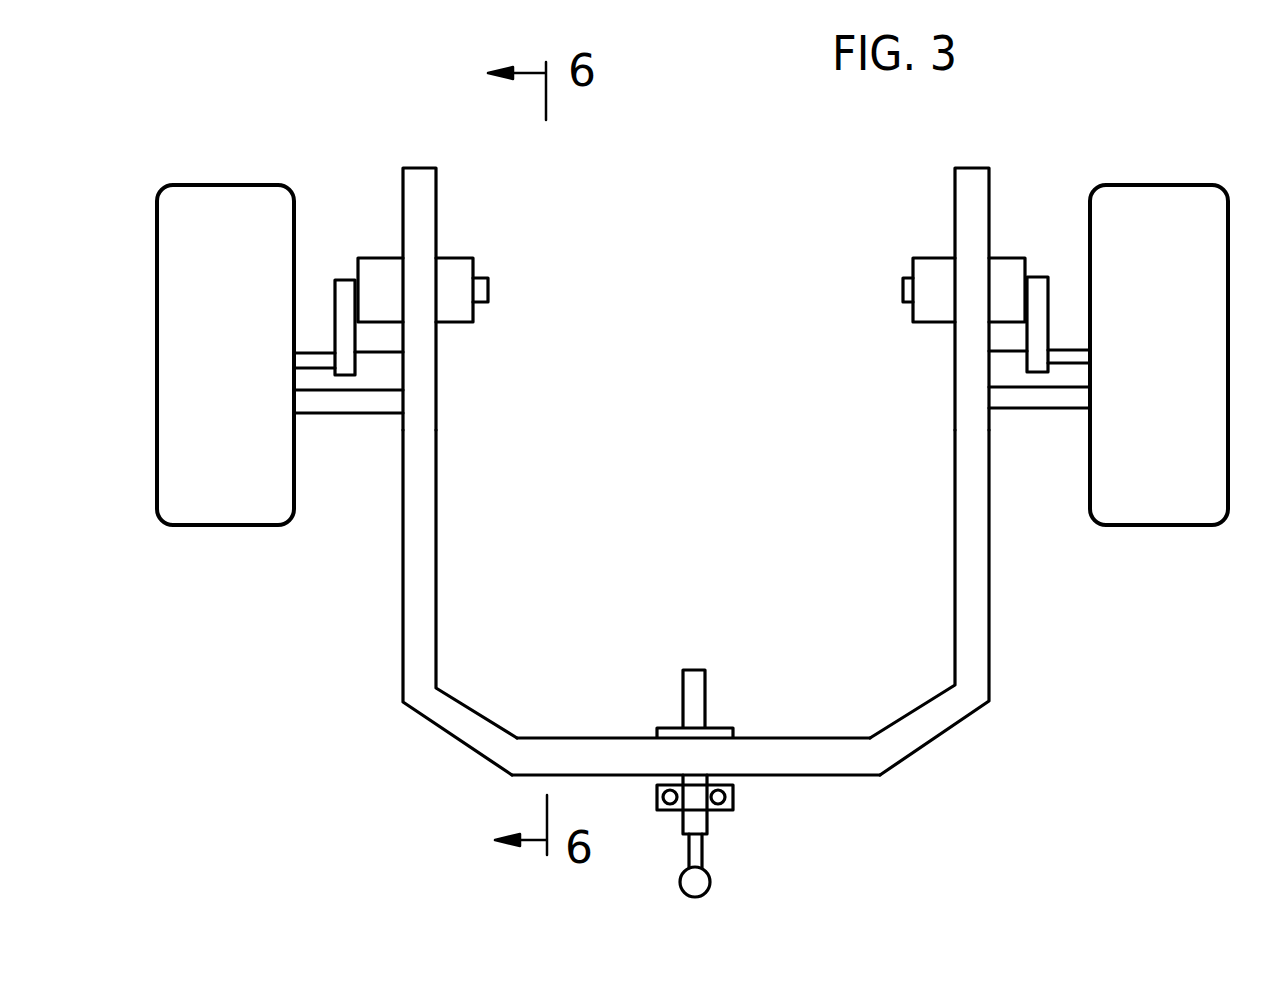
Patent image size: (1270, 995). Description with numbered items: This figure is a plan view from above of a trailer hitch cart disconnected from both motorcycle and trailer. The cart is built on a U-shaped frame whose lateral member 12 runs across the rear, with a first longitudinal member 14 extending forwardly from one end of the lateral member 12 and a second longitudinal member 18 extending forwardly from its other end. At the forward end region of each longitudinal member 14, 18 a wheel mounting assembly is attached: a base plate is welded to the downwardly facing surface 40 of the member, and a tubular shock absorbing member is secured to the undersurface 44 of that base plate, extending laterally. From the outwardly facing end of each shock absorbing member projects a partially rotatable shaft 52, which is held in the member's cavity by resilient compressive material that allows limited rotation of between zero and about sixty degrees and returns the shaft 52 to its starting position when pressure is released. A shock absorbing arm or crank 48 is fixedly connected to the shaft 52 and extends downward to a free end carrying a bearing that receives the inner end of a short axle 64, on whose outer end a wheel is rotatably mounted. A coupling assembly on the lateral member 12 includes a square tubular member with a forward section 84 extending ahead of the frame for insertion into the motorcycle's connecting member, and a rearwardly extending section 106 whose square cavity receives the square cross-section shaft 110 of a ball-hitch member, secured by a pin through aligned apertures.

The lateral member 12 is at (840, 762).
The first longitudinal member 14 is at (413, 555).
The second longitudinal member 18 is at (980, 540).
The downwardly facing surface 40 is at (405, 188).
The undersurface 44 is at (373, 272).
The shock absorbing arm or crank 48 is at (355, 350).
The partially rotatable shaft 52 is at (490, 288).
The short axle 64 is at (314, 358).
The forward section 84 is at (705, 693).
The rearwardly extending section 106 is at (685, 823).
The square cross-section shaft 110 is at (703, 850).